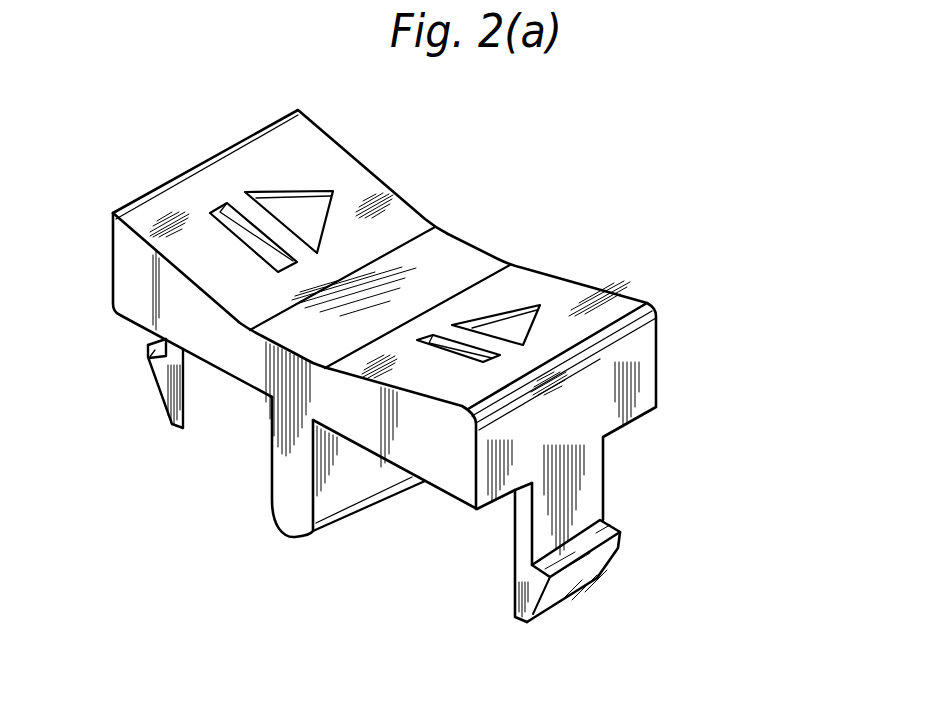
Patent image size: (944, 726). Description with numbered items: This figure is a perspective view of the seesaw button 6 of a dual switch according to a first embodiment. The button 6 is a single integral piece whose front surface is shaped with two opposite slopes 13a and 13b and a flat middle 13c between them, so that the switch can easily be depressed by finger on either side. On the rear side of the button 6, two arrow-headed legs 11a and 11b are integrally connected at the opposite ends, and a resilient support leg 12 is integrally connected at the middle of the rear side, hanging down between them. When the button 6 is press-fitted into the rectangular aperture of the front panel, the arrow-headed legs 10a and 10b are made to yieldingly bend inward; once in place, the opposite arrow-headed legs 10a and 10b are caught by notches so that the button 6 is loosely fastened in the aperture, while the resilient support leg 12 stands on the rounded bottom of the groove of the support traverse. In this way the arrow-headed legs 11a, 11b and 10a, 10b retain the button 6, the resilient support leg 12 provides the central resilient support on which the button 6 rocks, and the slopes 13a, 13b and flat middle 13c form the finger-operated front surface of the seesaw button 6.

The seesaw button 6 is at (453, 213).
The arrow-headed leg 10a is at (218, 395).
The arrow-headed leg 10b is at (517, 570).
The arrow-headed leg 11a is at (158, 366).
The arrow-headed leg 11b is at (622, 534).
The resilient support leg 12 is at (291, 507).
The slope 13a is at (340, 165).
The slope 13b is at (552, 286).
The flat middle 13c is at (470, 258).